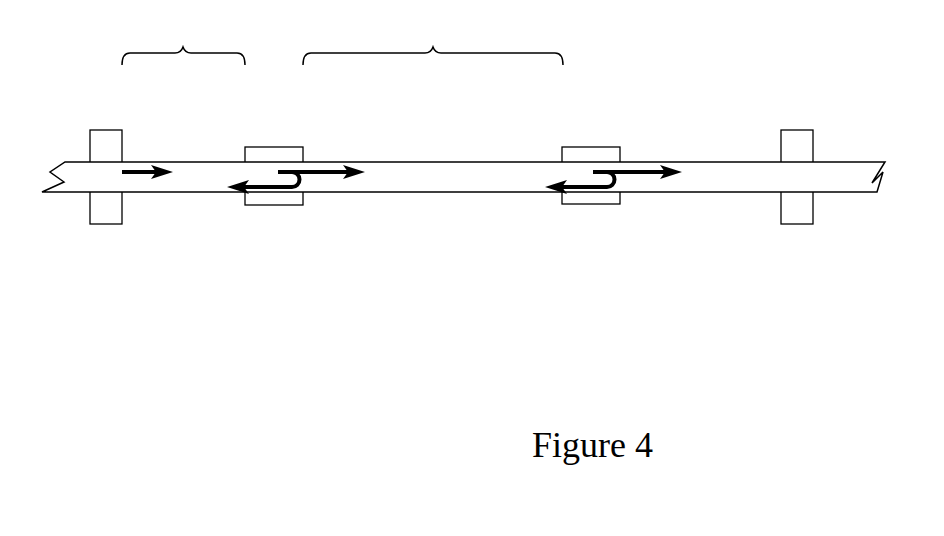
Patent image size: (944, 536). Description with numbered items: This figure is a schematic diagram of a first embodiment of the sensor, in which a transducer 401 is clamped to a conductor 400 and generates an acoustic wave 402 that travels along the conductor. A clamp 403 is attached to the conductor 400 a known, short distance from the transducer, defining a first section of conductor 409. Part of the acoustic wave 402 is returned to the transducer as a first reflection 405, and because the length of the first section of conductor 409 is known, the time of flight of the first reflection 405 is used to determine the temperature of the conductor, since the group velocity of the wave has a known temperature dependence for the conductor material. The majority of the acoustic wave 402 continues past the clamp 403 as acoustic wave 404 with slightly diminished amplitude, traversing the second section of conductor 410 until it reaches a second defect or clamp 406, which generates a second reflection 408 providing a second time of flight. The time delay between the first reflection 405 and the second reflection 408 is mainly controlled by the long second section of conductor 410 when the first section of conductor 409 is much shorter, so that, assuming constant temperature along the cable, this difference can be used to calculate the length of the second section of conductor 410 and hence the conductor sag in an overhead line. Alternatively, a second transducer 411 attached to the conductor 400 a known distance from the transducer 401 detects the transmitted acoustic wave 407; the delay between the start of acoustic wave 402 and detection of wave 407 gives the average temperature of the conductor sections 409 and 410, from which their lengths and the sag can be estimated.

The conductor 400 is at (78, 183).
The transducer 401 is at (103, 140).
The acoustic wave 402 is at (138, 177).
The clamp 403 is at (290, 152).
The acoustic wave 404 is at (317, 170).
The first reflection 405 is at (263, 188).
The second defect or clamp 406 is at (595, 153).
The transmitted acoustic wave 407 is at (633, 170).
The second reflection 408 is at (582, 187).
The first section of conductor 409 is at (183, 42).
The second section of conductor 410 is at (433, 42).
The second transducer 411 is at (800, 205).